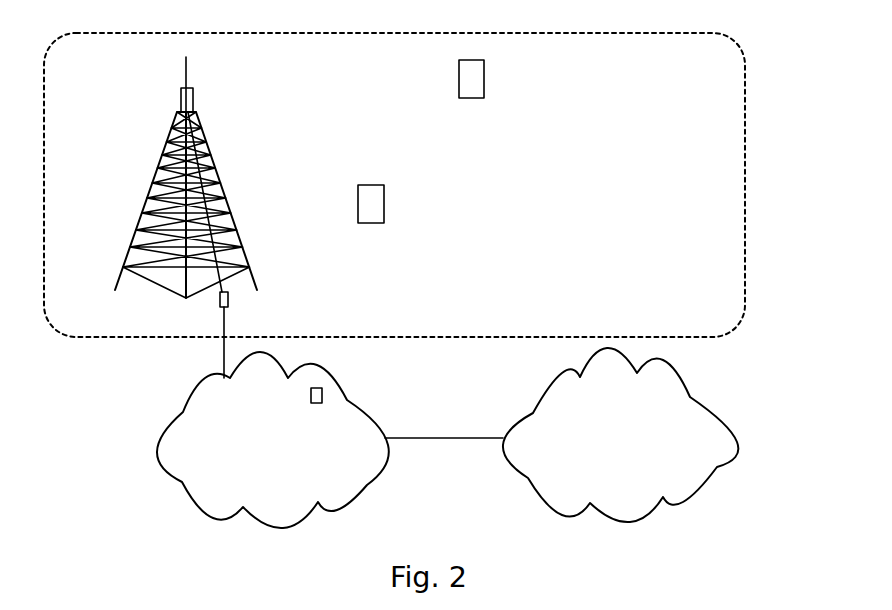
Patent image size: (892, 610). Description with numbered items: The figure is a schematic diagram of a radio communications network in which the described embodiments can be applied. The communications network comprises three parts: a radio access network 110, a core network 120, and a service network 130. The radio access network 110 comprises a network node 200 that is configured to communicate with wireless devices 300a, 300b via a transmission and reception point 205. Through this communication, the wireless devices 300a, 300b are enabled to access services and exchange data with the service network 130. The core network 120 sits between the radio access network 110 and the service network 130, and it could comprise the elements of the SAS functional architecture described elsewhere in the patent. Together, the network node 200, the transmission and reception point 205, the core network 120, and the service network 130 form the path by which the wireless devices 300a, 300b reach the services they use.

The radio access network 110 is at (108, 77).
The transmission and reception point 205 is at (181, 93).
The network node 200 is at (220, 297).
The wireless device 300a is at (462, 98).
The wireless device 300b is at (362, 223).
The core network 120 is at (278, 418).
The service network 130 is at (635, 400).